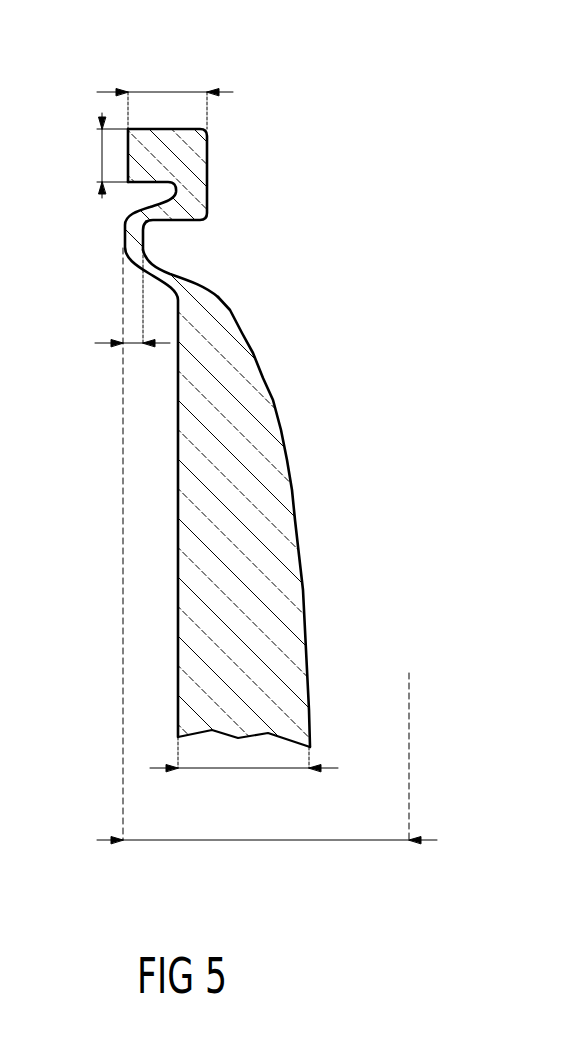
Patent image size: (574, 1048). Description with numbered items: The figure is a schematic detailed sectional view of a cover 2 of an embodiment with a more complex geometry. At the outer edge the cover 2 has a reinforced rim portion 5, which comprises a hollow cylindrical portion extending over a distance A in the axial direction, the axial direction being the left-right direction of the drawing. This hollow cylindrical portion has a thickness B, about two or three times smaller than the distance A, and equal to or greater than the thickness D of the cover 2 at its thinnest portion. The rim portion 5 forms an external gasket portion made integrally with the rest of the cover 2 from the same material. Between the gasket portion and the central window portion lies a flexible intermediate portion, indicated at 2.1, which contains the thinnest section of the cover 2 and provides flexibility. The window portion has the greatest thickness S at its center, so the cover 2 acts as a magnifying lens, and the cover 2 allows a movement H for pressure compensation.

The cover 2 is at (295, 521).
The curved transition section 2.1 is at (143, 238).
The rim portion 5 is at (193, 160).
The distance A is at (167, 92).
The thickness B is at (100, 156).
The thickness D is at (129, 344).
The thickness S is at (243, 770).
The movement H is at (265, 842).